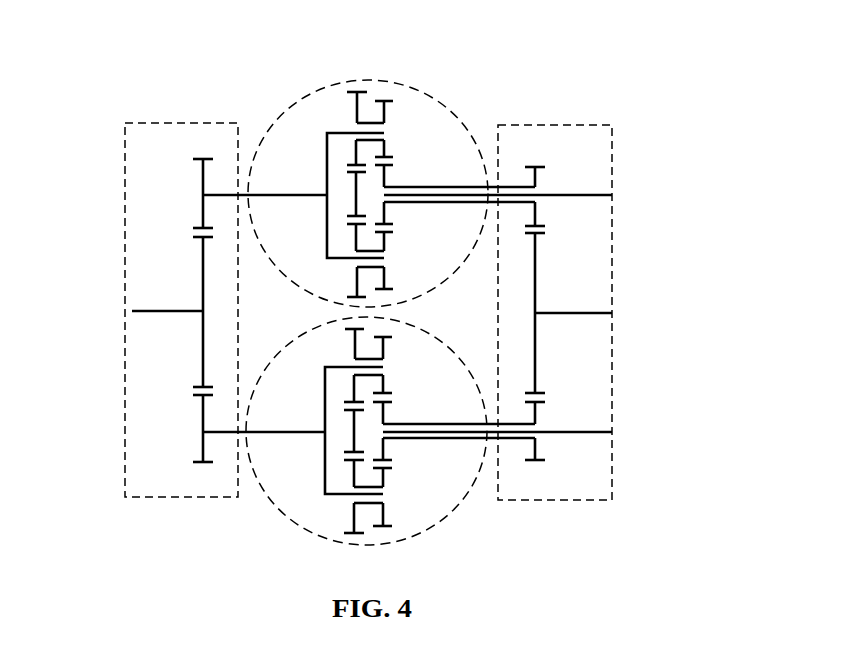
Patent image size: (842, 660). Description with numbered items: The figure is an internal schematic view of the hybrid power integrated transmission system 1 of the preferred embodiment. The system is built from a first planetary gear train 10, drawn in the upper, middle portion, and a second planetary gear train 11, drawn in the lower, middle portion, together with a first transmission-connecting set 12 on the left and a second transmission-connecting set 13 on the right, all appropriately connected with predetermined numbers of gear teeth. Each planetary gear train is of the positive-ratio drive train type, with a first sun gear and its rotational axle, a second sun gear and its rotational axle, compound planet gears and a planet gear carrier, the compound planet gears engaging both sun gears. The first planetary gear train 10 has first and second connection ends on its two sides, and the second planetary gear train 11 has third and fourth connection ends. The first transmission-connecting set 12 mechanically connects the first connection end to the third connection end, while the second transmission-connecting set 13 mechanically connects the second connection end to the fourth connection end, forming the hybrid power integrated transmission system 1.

The hybrid power integrated transmission system 1 is at (458, 86).
The first planetary gear train 10 is at (391, 176).
The second planetary gear train 11 is at (390, 445).
The first transmission-connecting set 12 is at (181, 294).
The second transmission-connecting set 13 is at (555, 295).